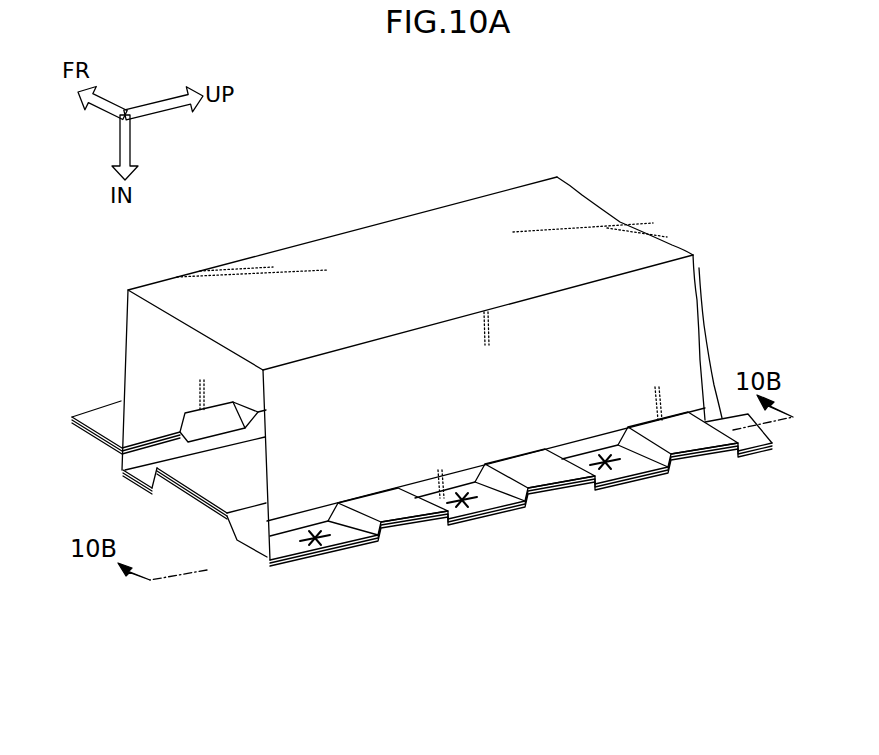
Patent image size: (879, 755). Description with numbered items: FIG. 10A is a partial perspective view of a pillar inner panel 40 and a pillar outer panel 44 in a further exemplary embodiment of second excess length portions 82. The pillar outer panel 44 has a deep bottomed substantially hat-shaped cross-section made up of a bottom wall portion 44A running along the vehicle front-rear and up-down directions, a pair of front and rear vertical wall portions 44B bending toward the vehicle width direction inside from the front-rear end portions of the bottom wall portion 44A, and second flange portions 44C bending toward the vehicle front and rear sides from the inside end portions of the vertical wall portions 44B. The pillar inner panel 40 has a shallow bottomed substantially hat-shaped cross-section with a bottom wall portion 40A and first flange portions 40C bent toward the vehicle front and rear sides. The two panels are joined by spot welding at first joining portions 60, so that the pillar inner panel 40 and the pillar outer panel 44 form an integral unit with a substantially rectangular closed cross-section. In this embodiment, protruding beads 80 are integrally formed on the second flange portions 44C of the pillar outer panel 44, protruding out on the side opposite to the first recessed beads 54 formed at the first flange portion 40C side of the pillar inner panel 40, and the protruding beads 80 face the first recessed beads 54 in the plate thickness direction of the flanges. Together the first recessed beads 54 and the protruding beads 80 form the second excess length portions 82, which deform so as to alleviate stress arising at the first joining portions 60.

The pillar outer panel 44 is at (503, 190).
The bottom wall portion 44A is at (334, 250).
The vertical wall portions 44B is at (680, 293).
The second flange portions 44C is at (97, 407).
The pillar inner panel 40 is at (122, 483).
The bottom wall portion 40A is at (250, 553).
The first flange portions 40C is at (82, 432).
The first recessed beads 54 is at (428, 522).
The first joining portions 60 is at (318, 545).
The protruding beads 80 is at (392, 522).
The second excess length portions 82 is at (487, 612).